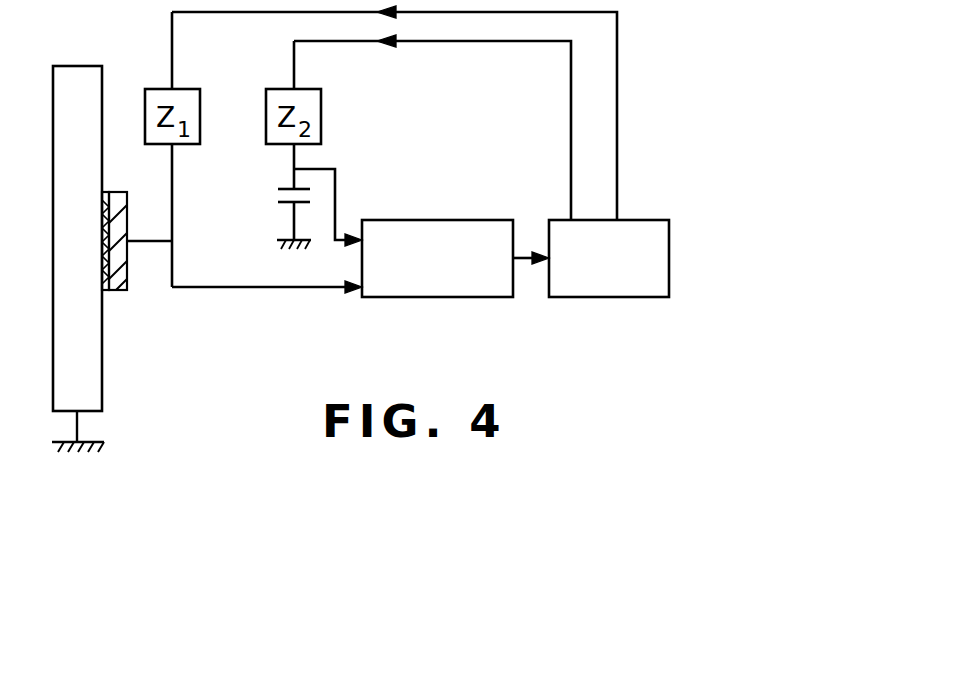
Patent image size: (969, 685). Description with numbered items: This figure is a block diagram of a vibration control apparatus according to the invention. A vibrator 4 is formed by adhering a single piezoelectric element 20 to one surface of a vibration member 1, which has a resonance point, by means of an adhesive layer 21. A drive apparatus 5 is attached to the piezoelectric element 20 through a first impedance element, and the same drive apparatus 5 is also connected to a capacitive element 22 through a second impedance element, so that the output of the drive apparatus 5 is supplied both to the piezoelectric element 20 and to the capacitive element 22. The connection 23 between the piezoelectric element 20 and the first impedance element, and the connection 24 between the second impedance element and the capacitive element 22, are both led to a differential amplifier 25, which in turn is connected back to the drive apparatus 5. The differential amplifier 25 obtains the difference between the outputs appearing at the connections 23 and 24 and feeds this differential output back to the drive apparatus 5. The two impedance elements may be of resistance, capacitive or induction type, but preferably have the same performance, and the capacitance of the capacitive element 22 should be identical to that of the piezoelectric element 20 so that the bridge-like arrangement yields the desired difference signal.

The vibration member 1 is at (88, 76).
The vibrator 4 is at (144, 277).
The drive apparatus 5 is at (652, 228).
The piezoelectric element 20 is at (129, 284).
The adhesive layer 21 is at (106, 192).
The capacitive element 22 is at (285, 188).
The connection 23 is at (172, 241).
The connection 24 is at (294, 169).
The differential amplifier 25 is at (469, 220).